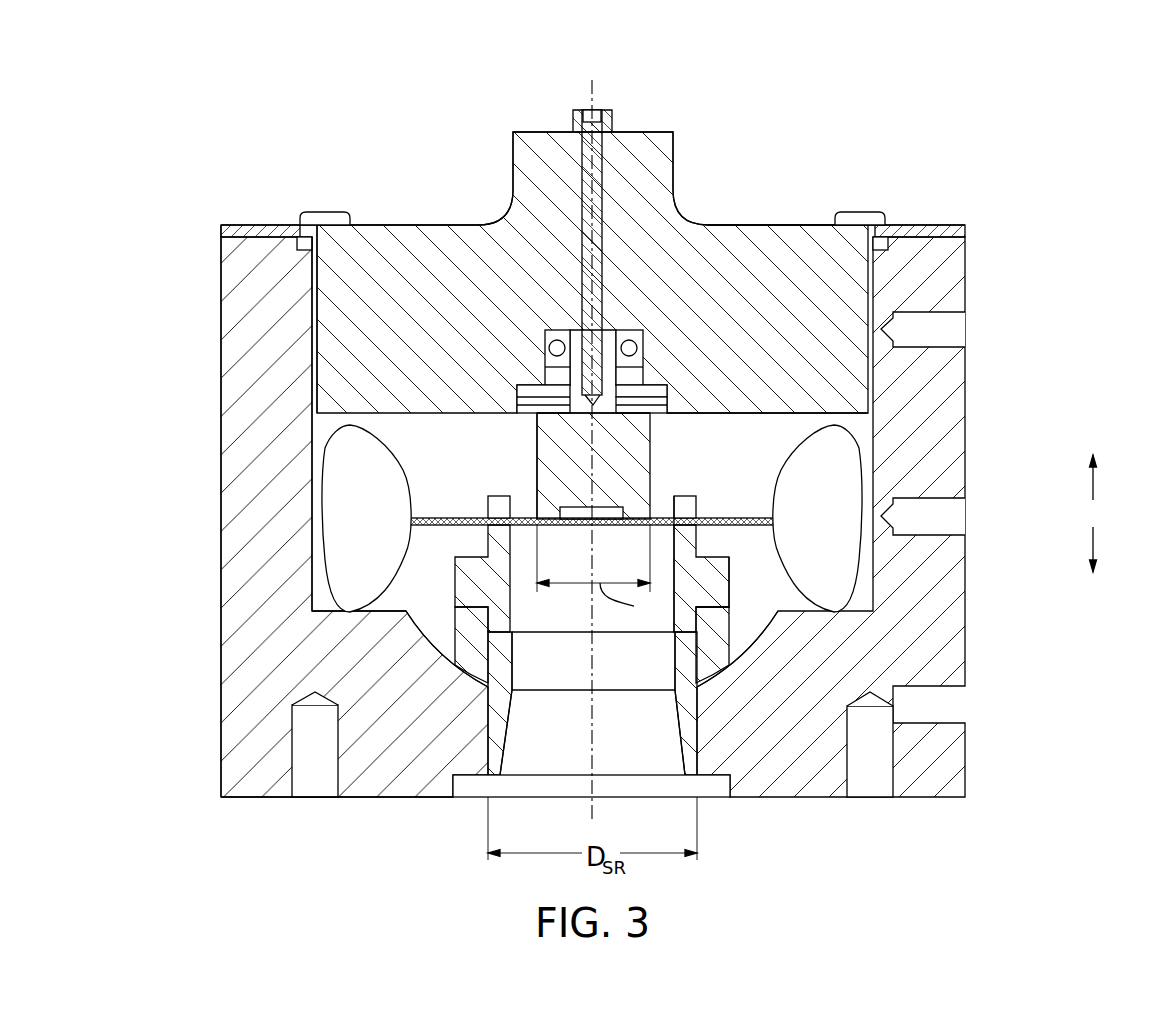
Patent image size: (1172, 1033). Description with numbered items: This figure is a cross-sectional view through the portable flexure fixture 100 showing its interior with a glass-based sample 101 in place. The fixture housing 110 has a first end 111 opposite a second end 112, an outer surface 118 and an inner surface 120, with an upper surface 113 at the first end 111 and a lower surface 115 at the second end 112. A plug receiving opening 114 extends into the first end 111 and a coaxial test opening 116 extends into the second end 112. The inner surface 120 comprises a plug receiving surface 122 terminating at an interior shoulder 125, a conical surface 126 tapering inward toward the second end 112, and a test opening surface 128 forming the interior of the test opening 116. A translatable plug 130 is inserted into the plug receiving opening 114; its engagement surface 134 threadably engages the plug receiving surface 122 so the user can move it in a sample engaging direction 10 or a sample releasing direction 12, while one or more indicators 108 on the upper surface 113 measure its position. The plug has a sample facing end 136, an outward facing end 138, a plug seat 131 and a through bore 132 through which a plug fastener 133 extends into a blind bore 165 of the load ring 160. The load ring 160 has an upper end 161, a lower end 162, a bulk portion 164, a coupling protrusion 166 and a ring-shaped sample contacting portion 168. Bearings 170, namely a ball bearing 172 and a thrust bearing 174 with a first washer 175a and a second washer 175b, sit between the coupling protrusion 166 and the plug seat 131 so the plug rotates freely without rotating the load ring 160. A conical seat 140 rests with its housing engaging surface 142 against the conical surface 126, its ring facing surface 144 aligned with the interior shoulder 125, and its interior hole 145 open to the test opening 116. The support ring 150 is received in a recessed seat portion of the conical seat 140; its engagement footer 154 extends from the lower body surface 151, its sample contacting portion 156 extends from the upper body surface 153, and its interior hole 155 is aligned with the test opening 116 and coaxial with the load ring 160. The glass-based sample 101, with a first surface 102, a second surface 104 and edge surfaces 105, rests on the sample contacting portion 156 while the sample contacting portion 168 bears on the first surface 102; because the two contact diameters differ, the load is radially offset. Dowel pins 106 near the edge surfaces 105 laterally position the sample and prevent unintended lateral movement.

The portable flexure fixture 100 is at (895, 124).
The fixture housing 110 is at (990, 262).
The second end 112 is at (385, 817).
The lower surface 115 is at (250, 798).
The outer surface 118 is at (221, 332).
The interior shoulder 125 is at (312, 603).
The conical surface 126 is at (440, 633).
The housing engaging surface 142 is at (757, 622).
The upper surface 113 is at (232, 226).
The indicator 108 is at (962, 224).
The inner surface 120 is at (320, 320).
The first end 111 is at (427, 158).
The translatable plug 130 is at (480, 170).
The plug receiving surface 122 is at (317, 280).
The sample facing end 136 is at (805, 414).
The outward facing end 138 is at (763, 224).
The engagement surface 134 is at (312, 245).
The plug receiving opening 114 is at (886, 208).
The bearings 170 is at (553, 333).
The ball bearing 172 is at (548, 347).
The thrust bearing 174 is at (517, 397).
The blind bore 165 is at (604, 340).
The plug seat 131 is at (643, 348).
The first washer 175a is at (668, 387).
The second washer 175b is at (668, 406).
The through bore 132 is at (602, 263).
The plug fastener 133 is at (598, 108).
The coupling protrusion 166 is at (598, 412).
The load ring 160 is at (653, 452).
The bulk portion 164 is at (537, 425).
The upper end 161 is at (560, 466).
The sample contacting portion 168 is at (633, 527).
The lower end 162 is at (570, 527).
The second surface 104 is at (482, 528).
The edge surfaces 105 is at (398, 526).
The first surface 102 is at (398, 517).
The dowel pins 106 is at (649, 518).
The glass-based sample 101 is at (427, 515).
The ring facing surface 144 is at (450, 610).
The support ring 150 is at (740, 571).
The sample contacting portion 156 is at (492, 514).
The lower body surface 151 is at (723, 608).
The upper body surface 153 is at (720, 553).
The engagement footer 154 is at (485, 622).
The conical seat 140 is at (723, 672).
The interior hole 155 is at (563, 597).
The test opening surface 128 is at (513, 676).
The interior hole 145 is at (572, 673).
The test opening 116 is at (652, 763).
The sample releasing direction 12 is at (1093, 487).
The sample engaging direction 10 is at (1093, 548).